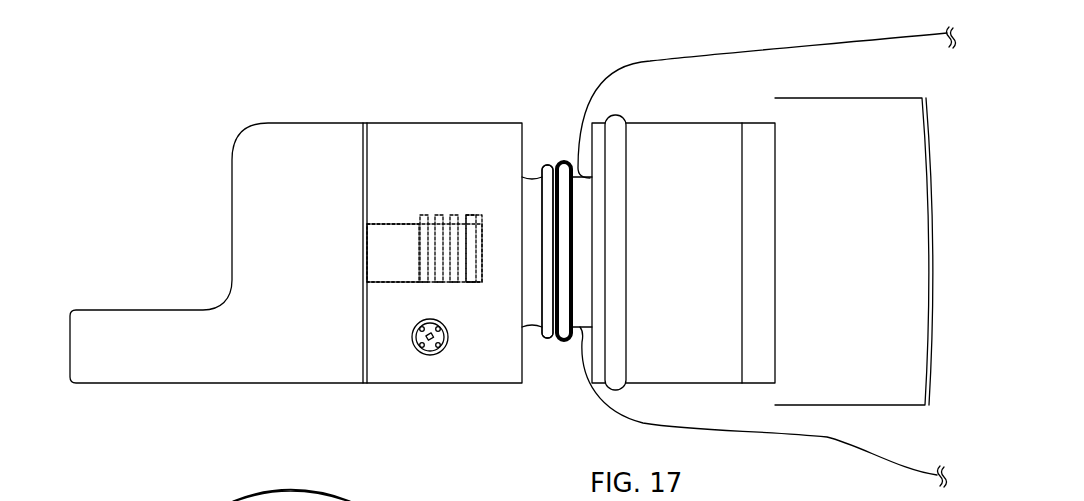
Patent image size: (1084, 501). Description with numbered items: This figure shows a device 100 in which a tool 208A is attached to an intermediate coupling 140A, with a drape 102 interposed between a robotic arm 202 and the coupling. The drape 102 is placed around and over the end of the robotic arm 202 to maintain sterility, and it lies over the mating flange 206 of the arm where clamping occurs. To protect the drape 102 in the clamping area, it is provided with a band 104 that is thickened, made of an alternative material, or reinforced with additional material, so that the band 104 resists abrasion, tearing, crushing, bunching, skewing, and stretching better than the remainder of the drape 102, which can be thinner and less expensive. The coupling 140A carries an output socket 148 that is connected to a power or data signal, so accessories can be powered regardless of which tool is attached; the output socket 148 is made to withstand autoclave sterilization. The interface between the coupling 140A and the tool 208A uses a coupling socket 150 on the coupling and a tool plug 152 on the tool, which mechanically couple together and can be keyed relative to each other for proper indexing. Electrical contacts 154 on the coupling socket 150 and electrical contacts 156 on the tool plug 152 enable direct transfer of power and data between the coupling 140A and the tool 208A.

The device 100 is at (185, 132).
The drape 102 is at (797, 52).
The band 104 is at (561, 156).
The coupling 140A is at (412, 387).
The output socket 148 is at (451, 354).
The coupling socket 150 is at (391, 218).
The tool plug 152 is at (375, 247).
The electrical contacts 154 is at (453, 214).
The electrical contacts 156 is at (478, 245).
The robotic arm 202 is at (872, 232).
The flange 206 is at (570, 302).
The tool 208A is at (242, 387).